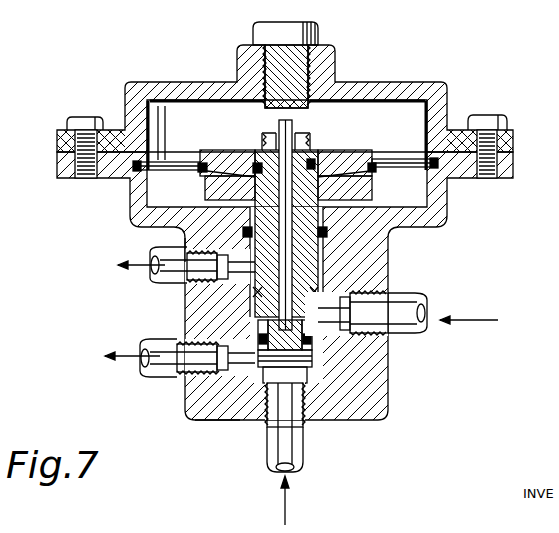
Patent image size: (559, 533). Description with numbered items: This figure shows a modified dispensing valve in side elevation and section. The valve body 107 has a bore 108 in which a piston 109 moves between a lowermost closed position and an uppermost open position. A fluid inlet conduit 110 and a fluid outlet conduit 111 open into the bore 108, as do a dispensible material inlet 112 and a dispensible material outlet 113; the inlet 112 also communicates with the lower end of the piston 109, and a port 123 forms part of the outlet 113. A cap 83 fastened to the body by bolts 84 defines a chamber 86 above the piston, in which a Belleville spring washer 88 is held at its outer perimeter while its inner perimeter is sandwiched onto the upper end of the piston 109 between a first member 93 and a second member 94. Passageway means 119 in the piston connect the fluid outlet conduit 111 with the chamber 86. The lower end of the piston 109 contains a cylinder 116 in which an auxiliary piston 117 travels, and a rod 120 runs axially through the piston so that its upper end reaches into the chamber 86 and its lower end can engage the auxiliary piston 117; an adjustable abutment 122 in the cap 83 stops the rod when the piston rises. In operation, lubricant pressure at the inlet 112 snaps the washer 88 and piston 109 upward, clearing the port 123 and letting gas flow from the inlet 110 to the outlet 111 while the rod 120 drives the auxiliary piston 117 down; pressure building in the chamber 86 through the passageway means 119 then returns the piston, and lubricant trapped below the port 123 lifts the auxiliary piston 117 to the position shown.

The cap 83 is at (368, 87).
The bolts 84 is at (84, 118).
The chamber 86 is at (222, 124).
The Belleville spring washer 88 is at (183, 170).
The first member 93 is at (207, 192).
The second member 94 is at (233, 152).
The valve body 107 is at (389, 391).
The bore 108 is at (318, 247).
The piston 109 is at (314, 261).
The fluid inlet conduit 110 is at (378, 322).
The fluid outlet conduit 111 is at (190, 275).
The dispensible material inlet 112 is at (293, 414).
The dispensible material outlet 113 is at (182, 375).
The cylinder 116 is at (298, 371).
The auxiliary piston 117 is at (283, 333).
The passageway means 119 is at (187, 239).
The rod 120 is at (294, 123).
The adjustable abutment 122 is at (266, 68).
The port 123 is at (209, 421).